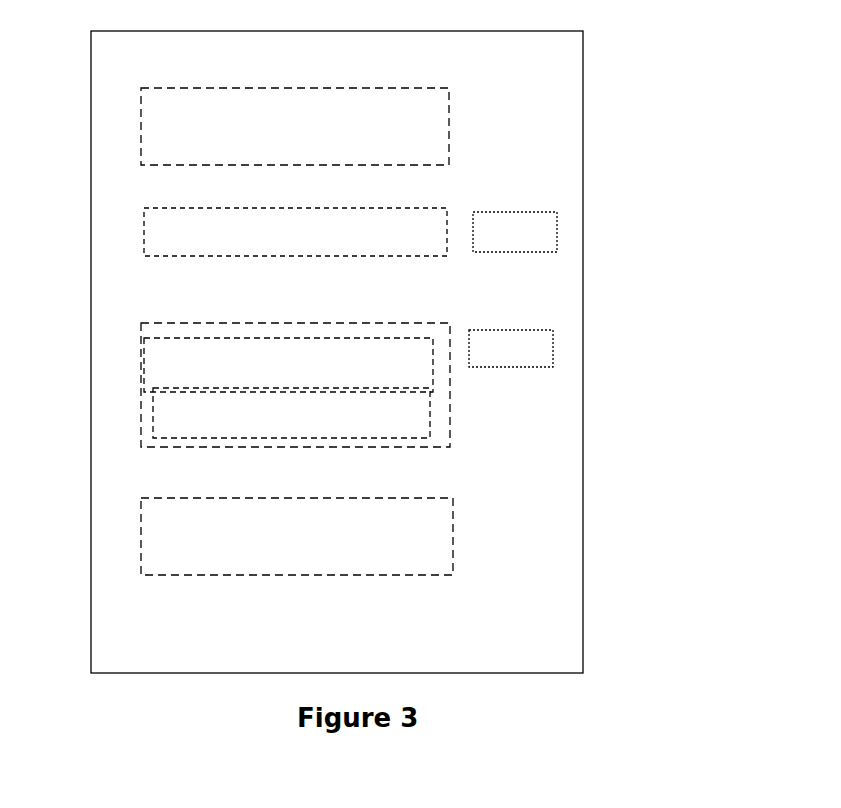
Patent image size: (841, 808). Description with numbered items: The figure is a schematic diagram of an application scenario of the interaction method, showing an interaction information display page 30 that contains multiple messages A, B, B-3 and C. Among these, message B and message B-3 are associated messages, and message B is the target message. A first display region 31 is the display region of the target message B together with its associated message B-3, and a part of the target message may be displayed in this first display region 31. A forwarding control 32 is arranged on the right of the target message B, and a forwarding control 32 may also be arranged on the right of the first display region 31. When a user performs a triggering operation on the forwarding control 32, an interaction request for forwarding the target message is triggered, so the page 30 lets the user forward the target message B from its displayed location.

The interaction information display page 30 is at (570, 43).
The first display region 31 is at (450, 396).
The forwarding control 32 is at (557, 230).
The message A is at (140, 131).
The target message B is at (145, 231).
The associated message B-3 is at (153, 416).
The message C is at (142, 537).